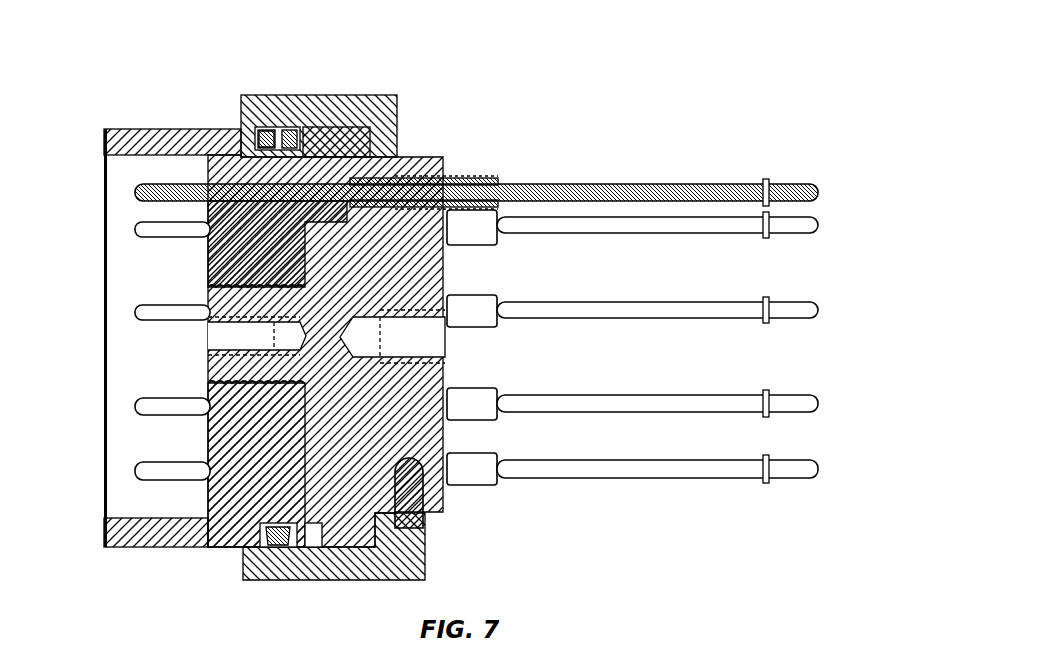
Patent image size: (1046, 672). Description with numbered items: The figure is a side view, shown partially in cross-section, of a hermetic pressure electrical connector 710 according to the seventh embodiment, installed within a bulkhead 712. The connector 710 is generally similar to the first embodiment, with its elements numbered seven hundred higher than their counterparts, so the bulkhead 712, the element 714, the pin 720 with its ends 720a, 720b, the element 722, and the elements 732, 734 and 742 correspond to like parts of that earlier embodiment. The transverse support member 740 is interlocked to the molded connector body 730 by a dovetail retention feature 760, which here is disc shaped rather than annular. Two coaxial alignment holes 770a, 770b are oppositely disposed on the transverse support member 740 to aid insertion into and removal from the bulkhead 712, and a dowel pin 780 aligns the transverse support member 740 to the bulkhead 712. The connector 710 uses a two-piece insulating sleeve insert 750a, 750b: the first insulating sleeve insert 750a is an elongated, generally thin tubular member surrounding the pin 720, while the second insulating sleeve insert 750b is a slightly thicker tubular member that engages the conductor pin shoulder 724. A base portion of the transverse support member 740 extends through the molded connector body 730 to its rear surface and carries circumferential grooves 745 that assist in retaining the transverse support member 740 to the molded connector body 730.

The electrical connector 710 is at (143, 47).
The bulkhead 712 is at (382, 95).
The lower retaining block 714 is at (350, 550).
The contact pin 720 is at (676, 316).
The contact pin first end 720a is at (140, 229).
The contact pin second end 720b is at (820, 226).
The center conductor rod 722 is at (215, 168).
The conductor pin shoulder 724 is at (265, 172).
The molded connector body 730 is at (218, 274).
The seal ring 732 is at (268, 140).
The seal gland 734 is at (288, 126).
The transverse support member 740 is at (448, 428).
The sleeve bore 742 is at (455, 180).
The circumferential grooves 745 is at (252, 393).
The first insulating sleeve insert 750a is at (462, 180).
The second insulating sleeve insert 750b is at (393, 150).
The dovetail retention feature 760 is at (399, 113).
The coaxial alignment hole 770a is at (428, 343).
The coaxial alignment hole 770b is at (218, 337).
The dowel pin 780 is at (416, 487).